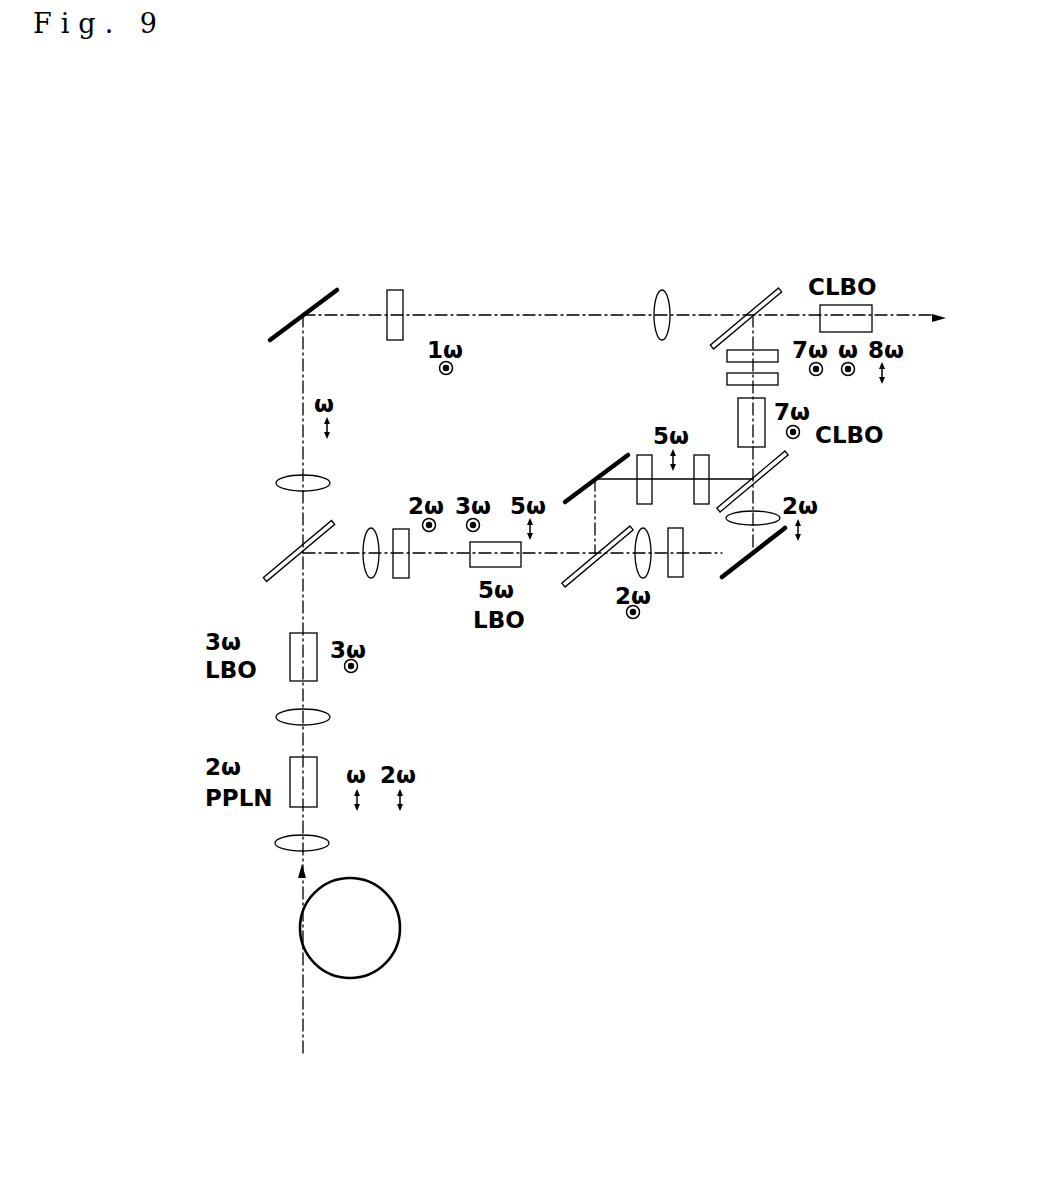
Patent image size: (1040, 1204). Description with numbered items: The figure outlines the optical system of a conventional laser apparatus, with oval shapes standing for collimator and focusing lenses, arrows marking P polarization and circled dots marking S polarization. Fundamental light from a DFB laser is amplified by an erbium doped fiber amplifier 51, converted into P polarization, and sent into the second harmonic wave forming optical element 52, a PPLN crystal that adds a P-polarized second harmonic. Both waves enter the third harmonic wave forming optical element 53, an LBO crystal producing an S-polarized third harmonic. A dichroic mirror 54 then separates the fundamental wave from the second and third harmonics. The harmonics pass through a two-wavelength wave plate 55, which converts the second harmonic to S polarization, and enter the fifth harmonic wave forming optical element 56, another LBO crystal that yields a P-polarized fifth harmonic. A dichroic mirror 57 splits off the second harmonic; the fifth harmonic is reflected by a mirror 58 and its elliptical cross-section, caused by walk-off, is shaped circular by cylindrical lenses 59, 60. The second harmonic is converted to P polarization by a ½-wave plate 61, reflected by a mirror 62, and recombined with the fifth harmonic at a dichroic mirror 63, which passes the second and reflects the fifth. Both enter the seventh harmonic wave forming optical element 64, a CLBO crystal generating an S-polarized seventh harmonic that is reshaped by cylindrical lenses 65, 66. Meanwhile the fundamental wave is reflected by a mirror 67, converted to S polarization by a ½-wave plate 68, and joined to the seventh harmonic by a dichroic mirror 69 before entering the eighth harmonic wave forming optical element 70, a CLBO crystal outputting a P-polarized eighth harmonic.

The erbium doped fiber amplifier 51 is at (400, 905).
The second harmonic wave forming optical element 52 is at (317, 770).
The third harmonic wave forming optical element 53 is at (318, 633).
The dichroic mirror 54 is at (285, 558).
The 2-wavelength wave plate 55 is at (401, 578).
The fifth harmonic wave forming optical element 56 is at (470, 566).
The dichroic mirror 57 is at (575, 588).
The mirror 58 is at (586, 480).
The cylindrical lens 59 is at (640, 453).
The cylindrical lens 60 is at (703, 453).
The ½-wave plate 61 is at (672, 578).
The mirror 62 is at (768, 545).
The dichroic mirror 63 is at (787, 461).
The seventh harmonic wave forming optical element 64 is at (762, 398).
The cylindrical lens 65 is at (727, 379).
The cylindrical lens 66 is at (727, 357).
The mirror 67 is at (280, 330).
The ½-wave plate 68 is at (403, 302).
The dichroic mirror 69 is at (757, 300).
The eighth harmonic wave forming optical element 70 is at (872, 312).